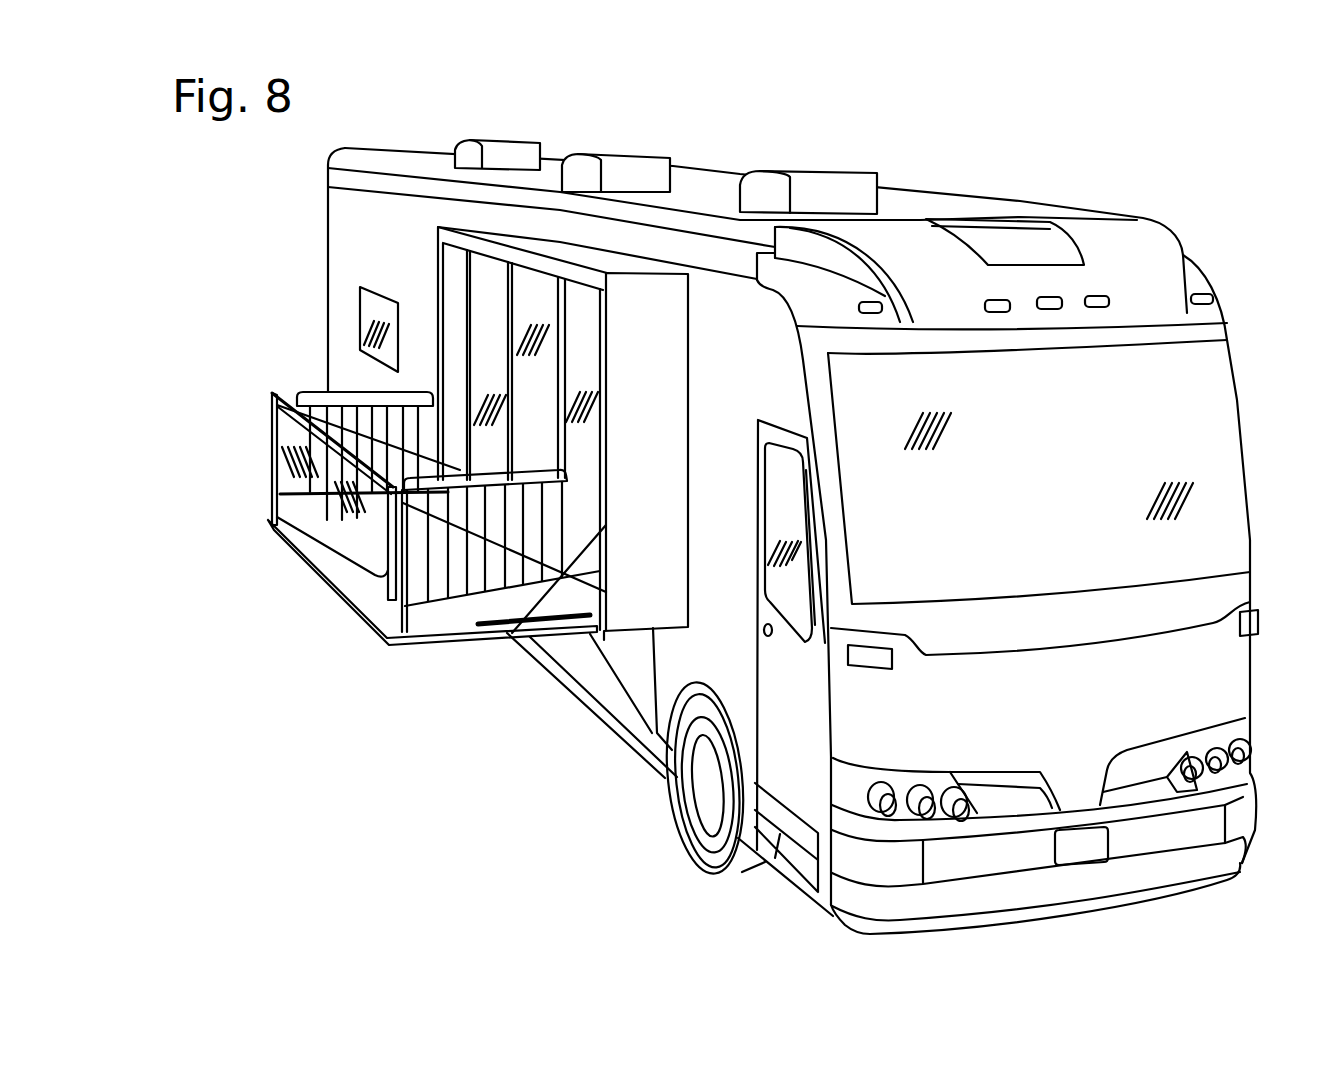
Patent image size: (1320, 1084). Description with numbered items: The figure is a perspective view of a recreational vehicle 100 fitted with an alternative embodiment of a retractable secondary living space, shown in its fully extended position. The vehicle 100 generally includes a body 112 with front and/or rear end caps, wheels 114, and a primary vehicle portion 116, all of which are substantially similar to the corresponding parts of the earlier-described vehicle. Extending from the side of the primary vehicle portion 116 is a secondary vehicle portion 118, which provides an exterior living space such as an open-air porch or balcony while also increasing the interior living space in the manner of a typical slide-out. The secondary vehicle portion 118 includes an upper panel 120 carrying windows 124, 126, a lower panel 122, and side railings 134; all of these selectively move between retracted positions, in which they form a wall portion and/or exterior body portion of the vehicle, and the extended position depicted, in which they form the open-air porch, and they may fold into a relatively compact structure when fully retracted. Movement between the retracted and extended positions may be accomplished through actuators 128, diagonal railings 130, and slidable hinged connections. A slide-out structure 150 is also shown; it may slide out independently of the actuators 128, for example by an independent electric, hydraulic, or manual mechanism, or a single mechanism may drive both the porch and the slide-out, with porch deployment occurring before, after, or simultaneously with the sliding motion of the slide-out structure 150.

The recreational vehicle 100 is at (761, 519).
The body 112 is at (928, 190).
The wheels 114 is at (722, 877).
The primary vehicle portion 116 is at (340, 242).
The secondary vehicle portion 118 is at (404, 511).
The upper panel 120 is at (307, 489).
The lower panel 122 is at (402, 652).
The window 124 is at (308, 466).
The window 126 is at (365, 530).
The actuators 128 is at (547, 620).
The diagonal railings 130 is at (585, 533).
The side railings 134 is at (311, 380).
The slide-out structure 150 is at (663, 353).